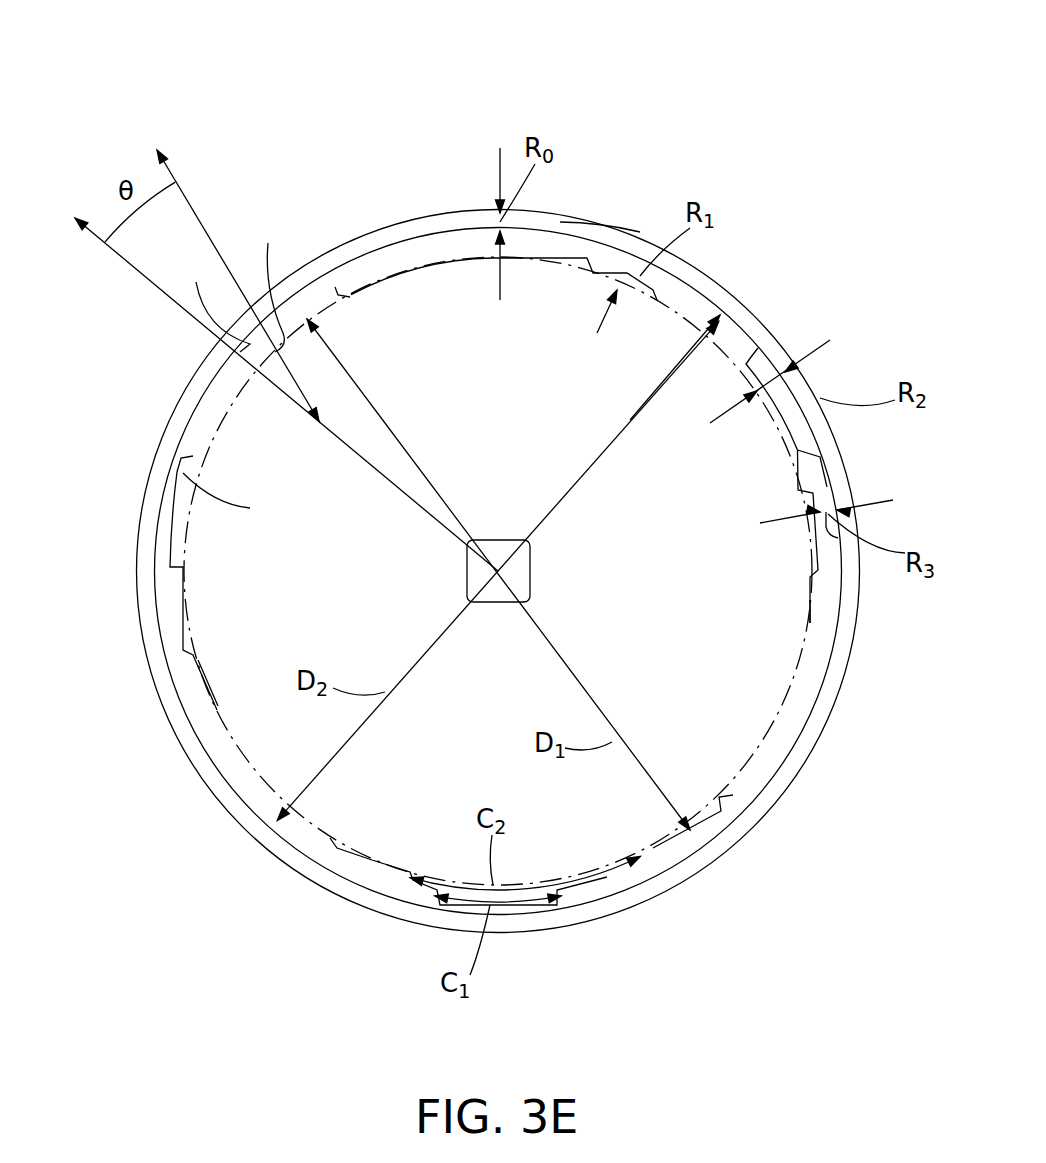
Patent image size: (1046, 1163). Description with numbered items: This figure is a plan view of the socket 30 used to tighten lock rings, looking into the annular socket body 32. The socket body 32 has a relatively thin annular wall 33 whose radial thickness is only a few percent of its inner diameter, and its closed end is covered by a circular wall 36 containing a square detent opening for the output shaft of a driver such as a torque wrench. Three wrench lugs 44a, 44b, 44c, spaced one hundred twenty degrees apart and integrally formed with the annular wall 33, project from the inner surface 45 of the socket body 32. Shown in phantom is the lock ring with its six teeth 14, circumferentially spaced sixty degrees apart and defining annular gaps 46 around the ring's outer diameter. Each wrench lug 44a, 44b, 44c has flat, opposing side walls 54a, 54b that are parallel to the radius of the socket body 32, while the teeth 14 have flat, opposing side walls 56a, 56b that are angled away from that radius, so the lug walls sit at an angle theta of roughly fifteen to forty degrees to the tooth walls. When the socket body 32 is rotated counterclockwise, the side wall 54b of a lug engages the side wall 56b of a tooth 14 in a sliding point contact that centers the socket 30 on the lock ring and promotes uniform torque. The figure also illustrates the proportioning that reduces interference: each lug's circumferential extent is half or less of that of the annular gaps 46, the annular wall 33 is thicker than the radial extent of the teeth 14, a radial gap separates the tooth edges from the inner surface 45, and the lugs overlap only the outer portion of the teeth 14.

The socket 30 is at (287, 112).
The annular socket body 32 is at (213, 787).
The annular wall 33 is at (598, 228).
The circular wall 36 is at (648, 588).
The teeth 14 is at (177, 617).
The wrench lug 44a is at (210, 405).
The wrench lug 44b is at (792, 443).
The wrench lug 44c is at (512, 905).
The inner surface 45 is at (808, 614).
The annular gaps 46 is at (197, 712).
The side wall of wrench lug 54a is at (205, 302).
The side wall of wrench lug 54b is at (242, 502).
The side wall of tooth 56a is at (264, 282).
The side wall of tooth 56b is at (353, 287).